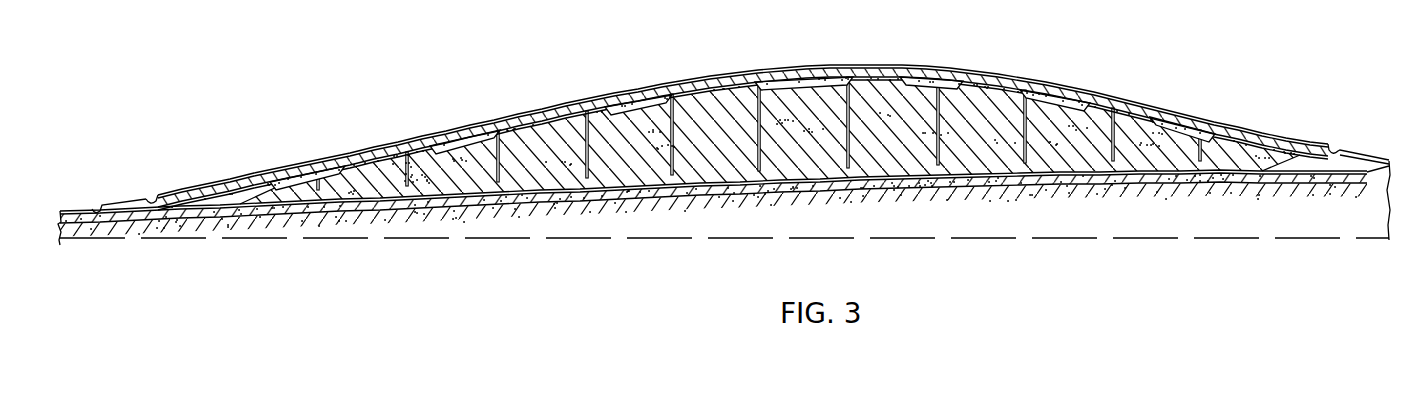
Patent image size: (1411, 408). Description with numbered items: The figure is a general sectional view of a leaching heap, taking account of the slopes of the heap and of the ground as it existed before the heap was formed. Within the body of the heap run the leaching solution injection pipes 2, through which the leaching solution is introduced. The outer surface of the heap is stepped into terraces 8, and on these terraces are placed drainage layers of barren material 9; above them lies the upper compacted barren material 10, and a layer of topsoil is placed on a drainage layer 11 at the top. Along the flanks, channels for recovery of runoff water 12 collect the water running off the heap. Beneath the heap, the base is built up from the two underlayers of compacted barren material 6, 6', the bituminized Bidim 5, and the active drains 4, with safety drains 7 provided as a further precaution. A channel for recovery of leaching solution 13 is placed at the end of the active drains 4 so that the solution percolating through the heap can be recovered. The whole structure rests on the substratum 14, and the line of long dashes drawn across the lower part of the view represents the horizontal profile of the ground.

The leaching solution injection pipes 2 is at (842, 120).
The active drains 4 is at (435, 198).
The bituminized "Bidim" 5 is at (528, 199).
The underlayer of compacted barren material 6 is at (713, 229).
The underlayer of compacted barren material 6' is at (713, 202).
The safety drains 7 is at (192, 220).
The terraces 8 is at (965, 85).
The drainage layers of barren material 9 is at (923, 83).
The upper compacted barren material 10 is at (1147, 113).
The drainage layer 11 is at (1080, 92).
The channels for recovery of runoff water 12 is at (148, 201).
The channel for recovery of leaching solution 13 is at (98, 209).
The substratum 14 is at (902, 217).